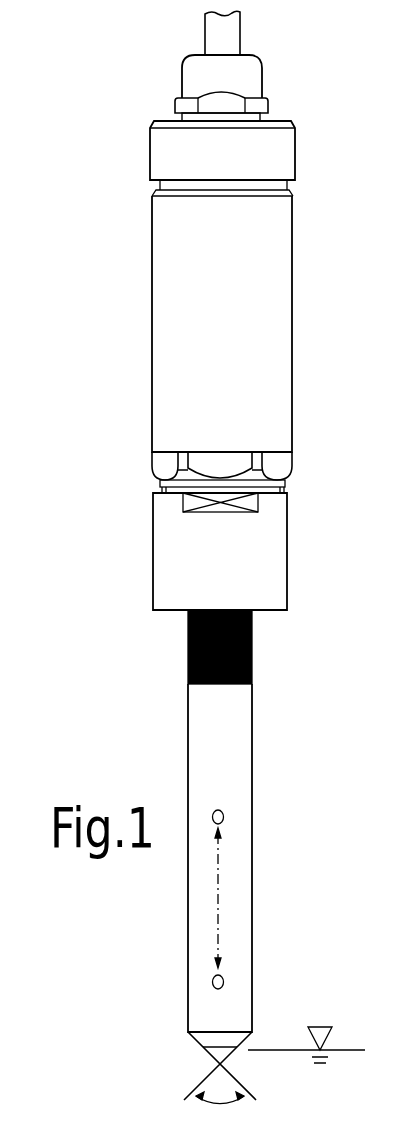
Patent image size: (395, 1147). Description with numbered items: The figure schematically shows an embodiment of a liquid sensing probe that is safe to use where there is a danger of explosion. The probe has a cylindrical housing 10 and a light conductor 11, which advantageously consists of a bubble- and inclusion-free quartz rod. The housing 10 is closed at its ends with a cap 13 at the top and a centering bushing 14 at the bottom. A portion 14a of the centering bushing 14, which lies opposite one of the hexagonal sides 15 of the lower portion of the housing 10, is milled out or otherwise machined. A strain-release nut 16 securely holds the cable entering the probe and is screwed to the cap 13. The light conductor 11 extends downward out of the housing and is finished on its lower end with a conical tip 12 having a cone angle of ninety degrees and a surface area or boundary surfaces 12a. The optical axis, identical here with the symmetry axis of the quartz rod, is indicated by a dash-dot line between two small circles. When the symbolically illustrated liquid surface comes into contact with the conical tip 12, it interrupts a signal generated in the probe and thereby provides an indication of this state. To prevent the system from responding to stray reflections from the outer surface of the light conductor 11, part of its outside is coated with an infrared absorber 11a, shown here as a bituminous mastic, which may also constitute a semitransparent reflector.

The housing 10 is at (152, 340).
The light conductor 11 is at (188, 713).
The infrared absorber 11a is at (253, 657).
The conical tip 12 is at (222, 1040).
The boundary surfaces 12a is at (201, 1050).
The cap 13 is at (150, 154).
The centering bushing 14 is at (153, 537).
The portion of the centering bushing 14a is at (190, 503).
The hexagonal sides 15 is at (163, 463).
The strain-release nut 16 is at (197, 85).